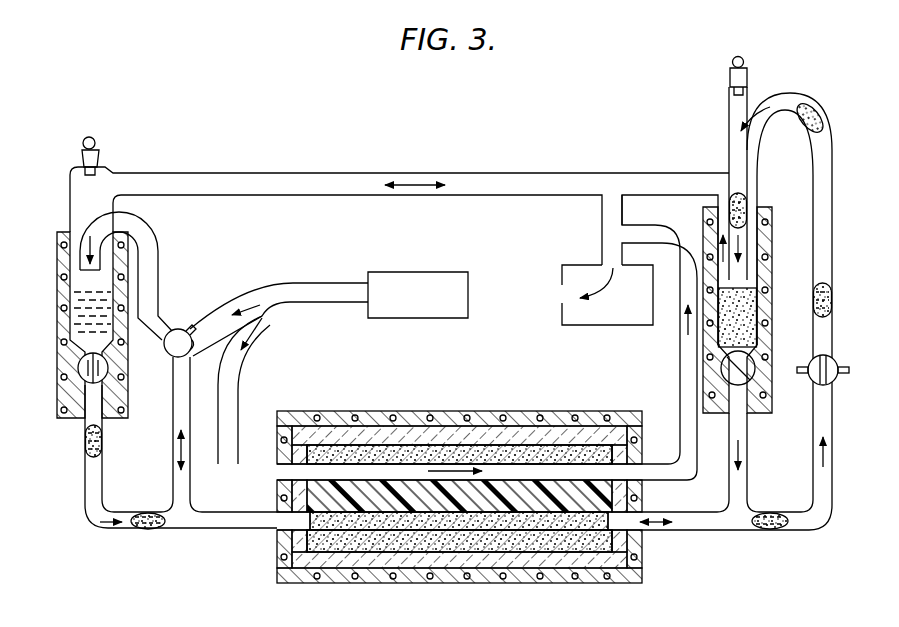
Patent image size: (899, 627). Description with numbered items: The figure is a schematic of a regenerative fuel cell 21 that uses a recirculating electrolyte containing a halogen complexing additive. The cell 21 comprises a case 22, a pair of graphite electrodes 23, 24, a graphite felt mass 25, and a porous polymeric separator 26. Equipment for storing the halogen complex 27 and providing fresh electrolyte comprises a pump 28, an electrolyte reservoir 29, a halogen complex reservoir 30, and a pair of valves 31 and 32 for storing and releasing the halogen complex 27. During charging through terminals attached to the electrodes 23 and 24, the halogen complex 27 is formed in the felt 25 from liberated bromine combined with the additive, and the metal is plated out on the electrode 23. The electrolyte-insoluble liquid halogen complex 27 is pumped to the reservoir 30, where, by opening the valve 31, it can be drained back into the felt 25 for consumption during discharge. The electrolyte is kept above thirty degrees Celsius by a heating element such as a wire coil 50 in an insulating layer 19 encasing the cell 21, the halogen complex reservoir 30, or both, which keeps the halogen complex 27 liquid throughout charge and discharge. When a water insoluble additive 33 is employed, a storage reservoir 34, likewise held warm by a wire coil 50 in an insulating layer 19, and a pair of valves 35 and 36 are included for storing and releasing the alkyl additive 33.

The insulating layer 19 is at (115, 355).
The cell 21 is at (444, 500).
The case 22 is at (632, 558).
The graphite electrode 23 is at (470, 452).
The graphite electrode 24 is at (447, 543).
The graphite felt mass 25 is at (393, 524).
The porous polymeric separator 26 is at (528, 497).
The halogen complex 27 is at (752, 333).
The pump 28 is at (428, 304).
The electrolyte reservoir 29 is at (638, 310).
The halogen complex reservoir 30 is at (758, 268).
The valve 31 is at (765, 382).
The valve 32 is at (840, 378).
The water insoluble additive 33 is at (72, 310).
The storage reservoir 34 is at (68, 268).
The valve 35 is at (78, 383).
The valve 36 is at (178, 328).
The wire coil 50 is at (116, 418).